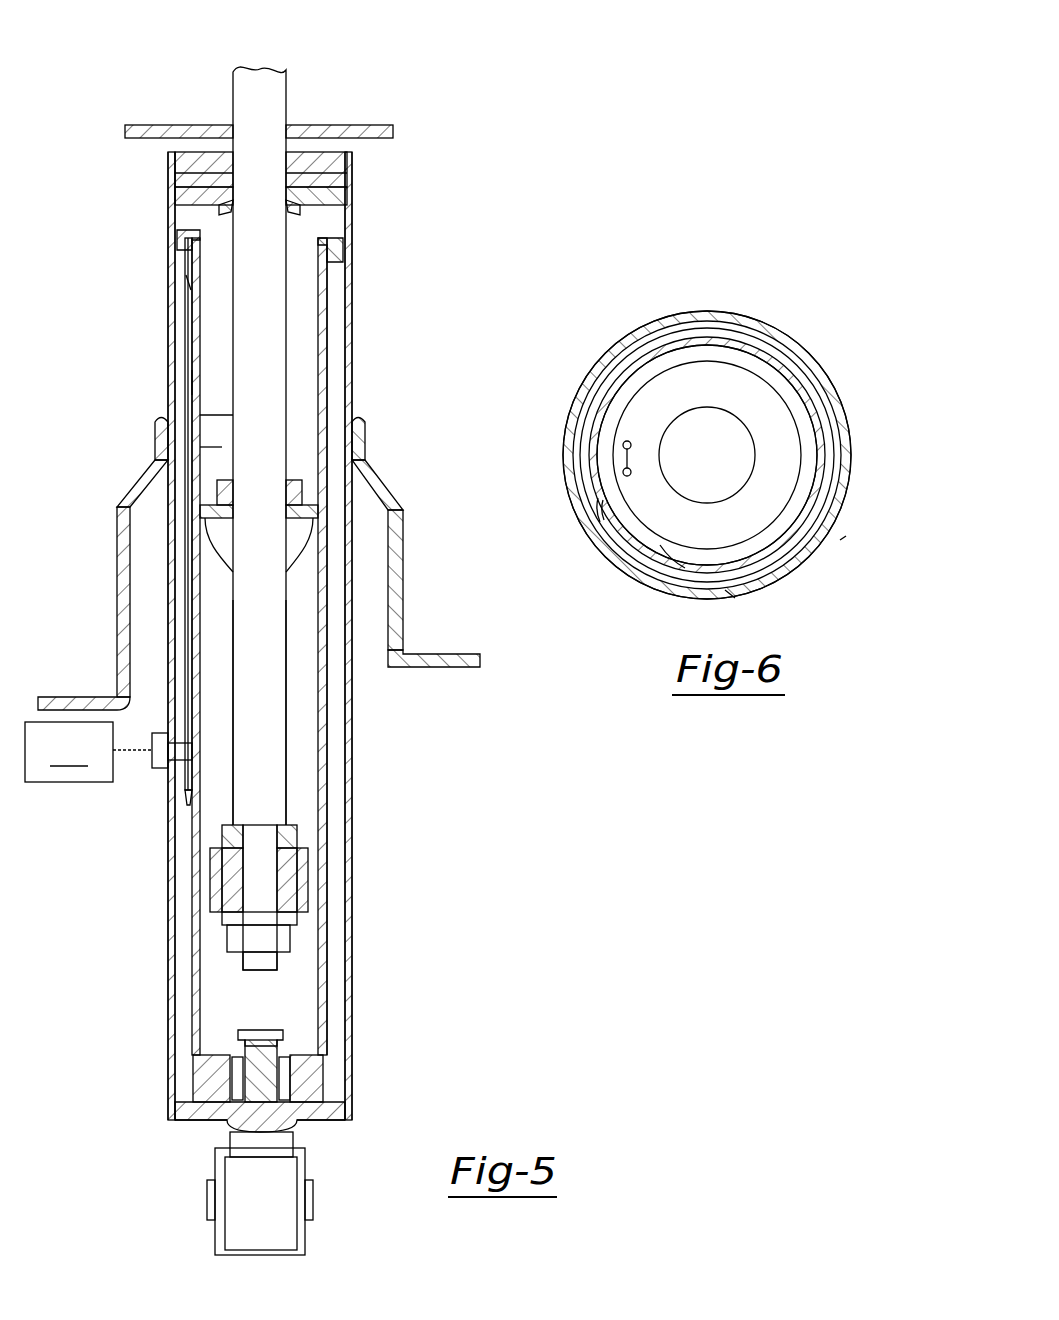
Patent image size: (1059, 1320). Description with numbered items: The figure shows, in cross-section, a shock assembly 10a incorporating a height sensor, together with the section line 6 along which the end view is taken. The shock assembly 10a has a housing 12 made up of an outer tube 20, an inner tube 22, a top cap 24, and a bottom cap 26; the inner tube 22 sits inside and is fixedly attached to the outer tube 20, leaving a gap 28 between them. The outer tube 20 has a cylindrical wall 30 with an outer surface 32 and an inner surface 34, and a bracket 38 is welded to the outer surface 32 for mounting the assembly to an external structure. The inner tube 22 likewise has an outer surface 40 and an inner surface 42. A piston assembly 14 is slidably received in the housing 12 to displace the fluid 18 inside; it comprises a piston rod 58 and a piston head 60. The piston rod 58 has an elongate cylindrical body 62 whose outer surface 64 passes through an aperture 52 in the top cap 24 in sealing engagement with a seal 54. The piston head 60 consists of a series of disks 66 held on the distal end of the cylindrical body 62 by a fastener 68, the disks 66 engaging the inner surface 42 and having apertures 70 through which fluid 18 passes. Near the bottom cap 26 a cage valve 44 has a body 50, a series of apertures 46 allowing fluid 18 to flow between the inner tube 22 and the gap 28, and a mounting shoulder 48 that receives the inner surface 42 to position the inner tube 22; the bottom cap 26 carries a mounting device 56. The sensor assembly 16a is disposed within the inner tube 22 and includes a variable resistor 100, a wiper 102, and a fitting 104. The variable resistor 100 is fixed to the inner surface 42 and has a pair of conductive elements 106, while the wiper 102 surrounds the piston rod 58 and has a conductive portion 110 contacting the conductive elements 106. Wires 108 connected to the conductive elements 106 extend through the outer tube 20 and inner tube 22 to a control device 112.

In FIG. 5, the shock assembly 10a is at (433, 160).
In FIG. 6, the shock assembly 10a is at (602, 306).
In FIG. 5, the housing 12 is at (356, 236).
In FIG. 5, the piston assembly 14 is at (303, 812).
In FIG. 6, the piston assembly 14 is at (757, 420).
In FIG. 5, the sensor assembly 16a is at (222, 447).
In FIG. 6, the sensor assembly 16a is at (645, 420).
In FIG. 5, the fluid 18 is at (207, 797).
In FIG. 5, the outer tube 20 is at (356, 352).
In FIG. 6, the outer tube 20 is at (843, 388).
In FIG. 5, the inner tube 22 is at (180, 366).
In FIG. 6, the inner tube 22 is at (832, 440).
In FIG. 5, the top cap 24 is at (345, 163).
In FIG. 5, the bottom cap 26 is at (330, 1125).
In FIG. 5, the gap 28 is at (336, 778).
In FIG. 6, the gap 28 is at (818, 525).
In FIG. 5, the cylindrical wall 30 is at (347, 408).
In FIG. 6, the cylindrical wall 30 is at (815, 572).
In FIG. 5, the outer surface 32 is at (350, 386).
In FIG. 6, the outer surface 32 is at (728, 337).
In FIG. 5, the inner surface 34 is at (326, 276).
In FIG. 6, the inner surface 34 is at (727, 592).
In FIG. 5, the bracket 38 is at (122, 617).
In FIG. 5, the outer surface 40 is at (188, 262).
In FIG. 6, the outer surface 40 is at (598, 510).
In FIG. 5, the inner surface 42 is at (196, 382).
In FIG. 6, the inner surface 42 is at (680, 562).
In FIG. 5, the cage valve 44 is at (322, 1098).
In FIG. 5, the apertures 46 is at (292, 1072).
In FIG. 5, the mounting shoulder 48 is at (196, 1080).
In FIG. 5, the body 50 is at (265, 1122).
In FIG. 5, the aperture 52 is at (300, 190).
In FIG. 5, the seal 54 is at (212, 192).
In FIG. 5, the mounting device 56 is at (270, 1225).
In FIG. 5, the piston rod 58 is at (287, 732).
In FIG. 6, the piston rod 58 is at (718, 470).
In FIG. 5, the piston head 60 is at (298, 872).
In FIG. 5, the cylindrical body 62 is at (268, 676).
In FIG. 5, the outer surface 64 is at (242, 420).
In FIG. 5, the disks 66 is at (228, 838).
In FIG. 5, the fastener 68 is at (286, 942).
In FIG. 5, the apertures 70 is at (306, 882).
In FIG. 5, the variable resistor 100 is at (187, 284).
In FIG. 6, the variable resistor 100 is at (618, 449).
In FIG. 5, the wiper 102 is at (302, 512).
In FIG. 5, the fitting 104 is at (290, 480).
In FIG. 6, the conductive elements 106 is at (618, 462).
In FIG. 6, the wires 108 is at (624, 443).
In FIG. 5, the conductive portion 110 is at (286, 546).
In FIG. 5, the control device 112 is at (108, 752).
In FIG. 5, the section line 6 is at (125, 282).